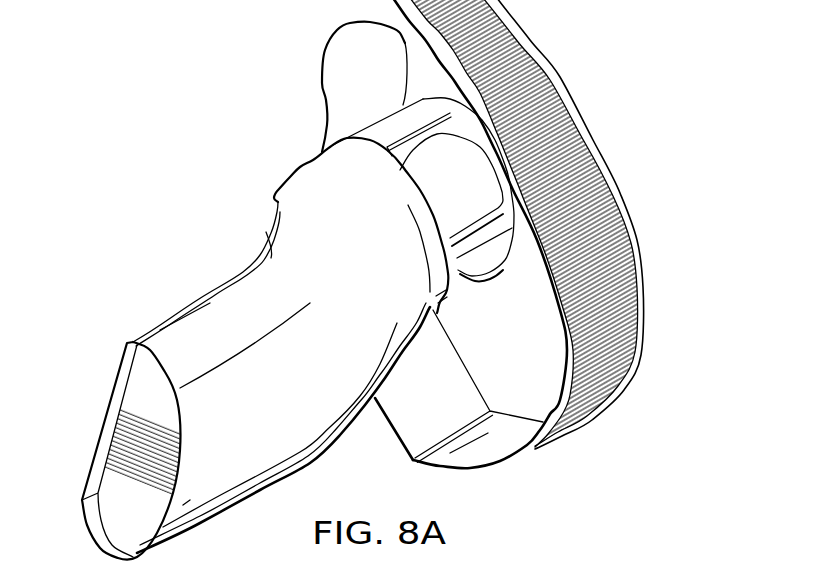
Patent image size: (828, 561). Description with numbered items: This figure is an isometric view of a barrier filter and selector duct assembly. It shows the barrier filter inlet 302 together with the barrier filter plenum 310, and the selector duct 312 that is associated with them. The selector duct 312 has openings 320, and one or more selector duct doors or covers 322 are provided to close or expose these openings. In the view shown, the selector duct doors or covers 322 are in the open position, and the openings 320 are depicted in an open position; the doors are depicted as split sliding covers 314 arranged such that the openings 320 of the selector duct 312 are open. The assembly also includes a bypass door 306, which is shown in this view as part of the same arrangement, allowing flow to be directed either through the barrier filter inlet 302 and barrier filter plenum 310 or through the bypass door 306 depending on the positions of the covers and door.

The barrier filter inlet 302 is at (628, 226).
The bypass door 306 is at (133, 389).
The barrier filter plenum 310 is at (513, 391).
The selector duct 312 is at (487, 284).
The split sliding covers 314 is at (203, 318).
The openings 320 is at (449, 179).
The selector duct doors or covers 322 is at (388, 118).